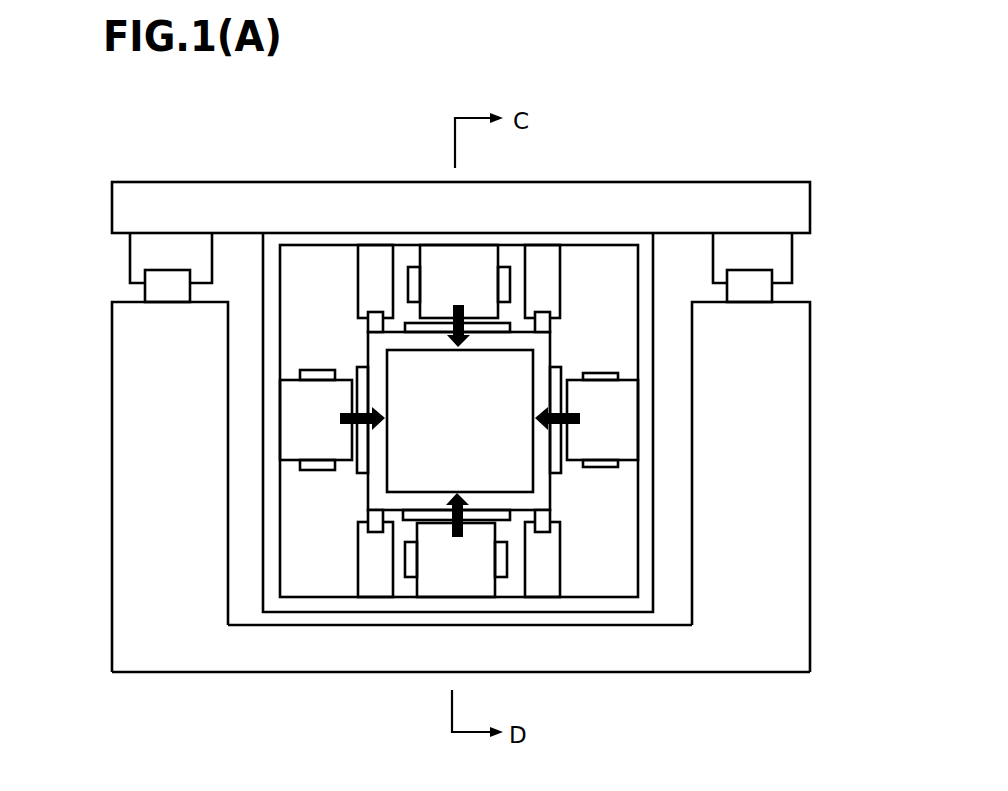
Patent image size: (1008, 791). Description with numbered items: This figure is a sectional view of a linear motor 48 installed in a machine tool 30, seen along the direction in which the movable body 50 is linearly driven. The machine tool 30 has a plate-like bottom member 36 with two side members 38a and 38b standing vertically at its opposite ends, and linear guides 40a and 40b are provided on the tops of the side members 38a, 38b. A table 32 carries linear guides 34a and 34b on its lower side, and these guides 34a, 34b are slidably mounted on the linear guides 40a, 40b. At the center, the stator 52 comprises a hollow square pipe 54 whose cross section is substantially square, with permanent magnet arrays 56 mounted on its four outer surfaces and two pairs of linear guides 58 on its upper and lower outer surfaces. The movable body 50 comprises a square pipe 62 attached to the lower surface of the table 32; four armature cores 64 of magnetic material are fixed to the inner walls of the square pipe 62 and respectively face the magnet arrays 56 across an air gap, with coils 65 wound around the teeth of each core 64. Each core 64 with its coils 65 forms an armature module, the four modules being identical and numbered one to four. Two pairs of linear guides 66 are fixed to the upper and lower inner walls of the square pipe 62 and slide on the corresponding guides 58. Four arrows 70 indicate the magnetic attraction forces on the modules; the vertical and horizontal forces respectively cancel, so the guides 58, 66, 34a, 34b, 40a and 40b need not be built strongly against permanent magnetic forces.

The machine tool 30 is at (720, 685).
The table 32 is at (575, 198).
The linear guide 34a is at (143, 252).
The linear guide 34b is at (775, 257).
The bottom member 36 is at (592, 652).
The side member 38a is at (147, 460).
The side member 38b is at (788, 502).
The linear guide 40a is at (170, 285).
The linear guide 40b is at (757, 290).
The linear motor 48 is at (713, 158).
The movable body 50 is at (252, 499).
The stator 52 is at (436, 428).
The pipe 54 is at (383, 463).
The permanent magnet array 56 is at (360, 466).
The linear guide 58 is at (368, 325).
The square pipe 62 is at (645, 522).
The armature core 64 is at (623, 395).
The coil 65 is at (603, 373).
The linear guide 66 is at (373, 272).
The arrow 70 is at (462, 312).